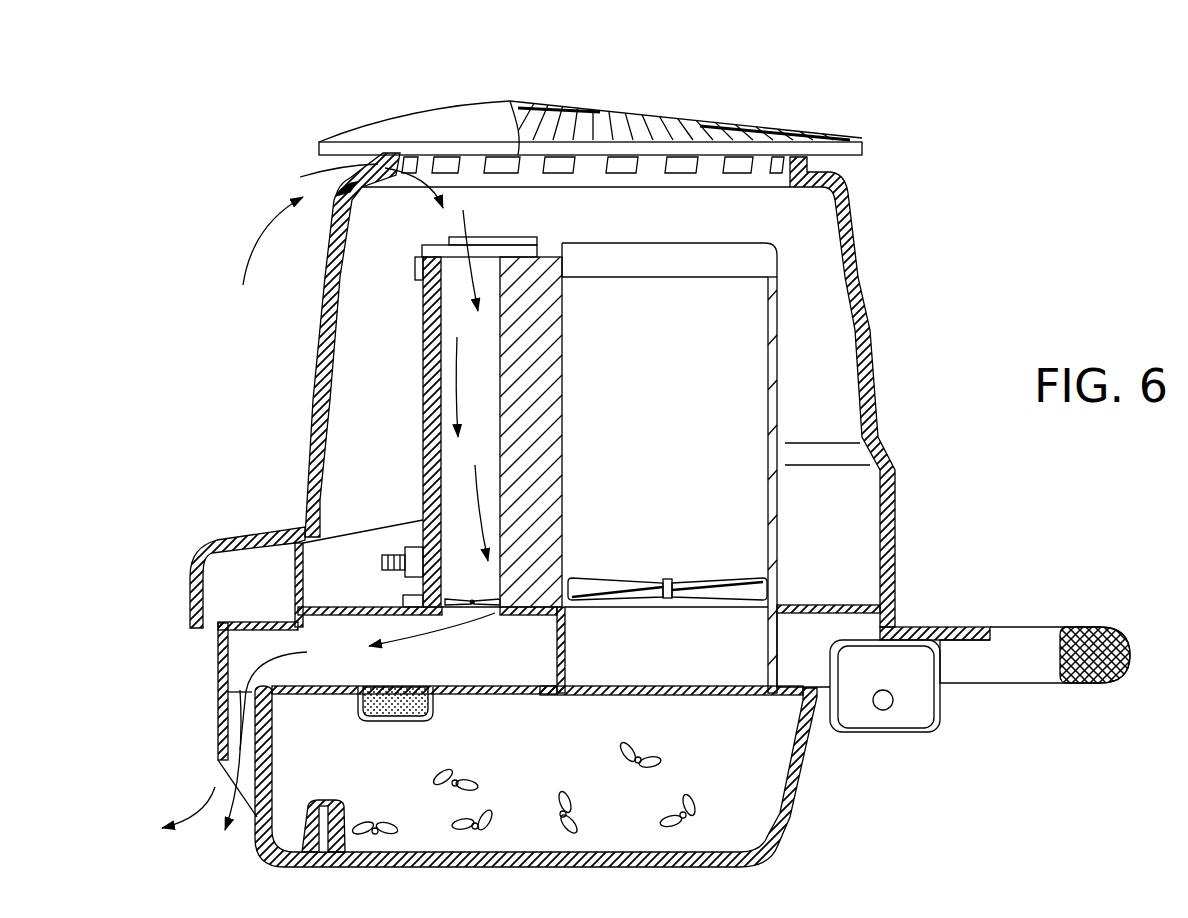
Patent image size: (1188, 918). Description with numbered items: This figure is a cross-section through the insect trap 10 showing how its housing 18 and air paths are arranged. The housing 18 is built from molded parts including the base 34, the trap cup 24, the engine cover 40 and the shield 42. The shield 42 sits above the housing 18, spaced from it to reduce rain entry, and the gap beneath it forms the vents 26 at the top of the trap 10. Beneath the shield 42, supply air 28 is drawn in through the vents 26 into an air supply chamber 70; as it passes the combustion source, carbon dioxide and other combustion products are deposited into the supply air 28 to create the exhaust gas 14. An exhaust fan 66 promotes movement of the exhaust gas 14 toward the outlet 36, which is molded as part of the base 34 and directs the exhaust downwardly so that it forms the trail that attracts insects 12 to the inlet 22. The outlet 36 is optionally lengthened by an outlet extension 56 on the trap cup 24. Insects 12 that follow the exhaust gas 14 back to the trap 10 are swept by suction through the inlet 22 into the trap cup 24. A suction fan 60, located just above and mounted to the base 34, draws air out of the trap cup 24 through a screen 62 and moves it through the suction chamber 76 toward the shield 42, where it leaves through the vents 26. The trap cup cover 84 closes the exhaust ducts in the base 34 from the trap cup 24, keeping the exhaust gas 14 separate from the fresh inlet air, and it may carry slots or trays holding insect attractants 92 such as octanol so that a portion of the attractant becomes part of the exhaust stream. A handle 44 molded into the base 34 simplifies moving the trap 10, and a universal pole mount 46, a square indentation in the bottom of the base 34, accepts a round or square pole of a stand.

The trap 10 is at (920, 229).
The insects 12 is at (653, 765).
The exhaust gas 14 is at (448, 640).
The trap housing 18 is at (871, 346).
The inlet 22 is at (218, 604).
The trap cup 24 is at (790, 808).
The vents 26 is at (447, 167).
The air supply 28 is at (262, 240).
The base 34 is at (815, 643).
The outlet 36 is at (235, 658).
The engine cover 40 is at (315, 390).
The shield 42 is at (753, 122).
The handle 44 is at (1098, 657).
The universal pole mount 46 is at (867, 733).
The outlet extension 56 is at (218, 745).
The suction fan 60 is at (600, 588).
The screen 62 is at (600, 697).
The exhaust fan 66 is at (457, 598).
The air supply chamber 70 is at (455, 310).
The suction chamber 76 is at (653, 434).
The trap cup cover 84 is at (488, 694).
The insect attractants 92 is at (388, 722).